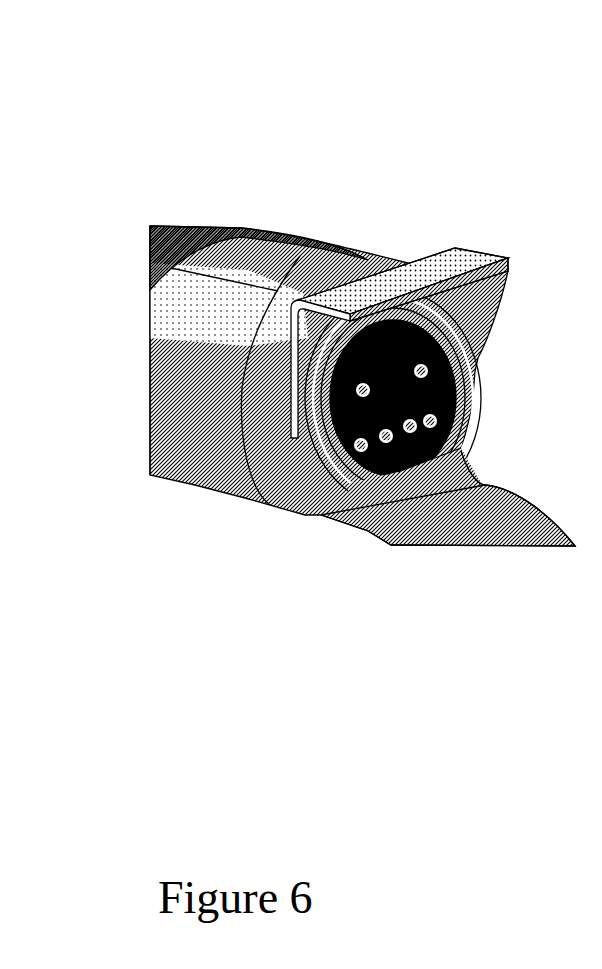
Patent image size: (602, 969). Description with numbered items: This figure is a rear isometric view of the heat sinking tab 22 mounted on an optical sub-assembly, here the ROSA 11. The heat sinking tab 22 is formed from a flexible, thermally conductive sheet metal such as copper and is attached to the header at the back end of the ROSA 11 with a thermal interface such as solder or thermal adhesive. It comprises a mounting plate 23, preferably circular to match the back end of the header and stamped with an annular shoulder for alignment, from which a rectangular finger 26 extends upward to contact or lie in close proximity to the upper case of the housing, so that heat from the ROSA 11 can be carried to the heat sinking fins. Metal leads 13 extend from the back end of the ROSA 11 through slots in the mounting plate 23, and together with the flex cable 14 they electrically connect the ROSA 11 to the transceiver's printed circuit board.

The ROSA 11 is at (228, 252).
The heat sinking tab 22 is at (407, 217).
The rectangular finger 26 is at (458, 250).
The mounting plate 23 is at (278, 430).
The metal leads 13 is at (463, 393).
The flex cable 14 is at (458, 520).